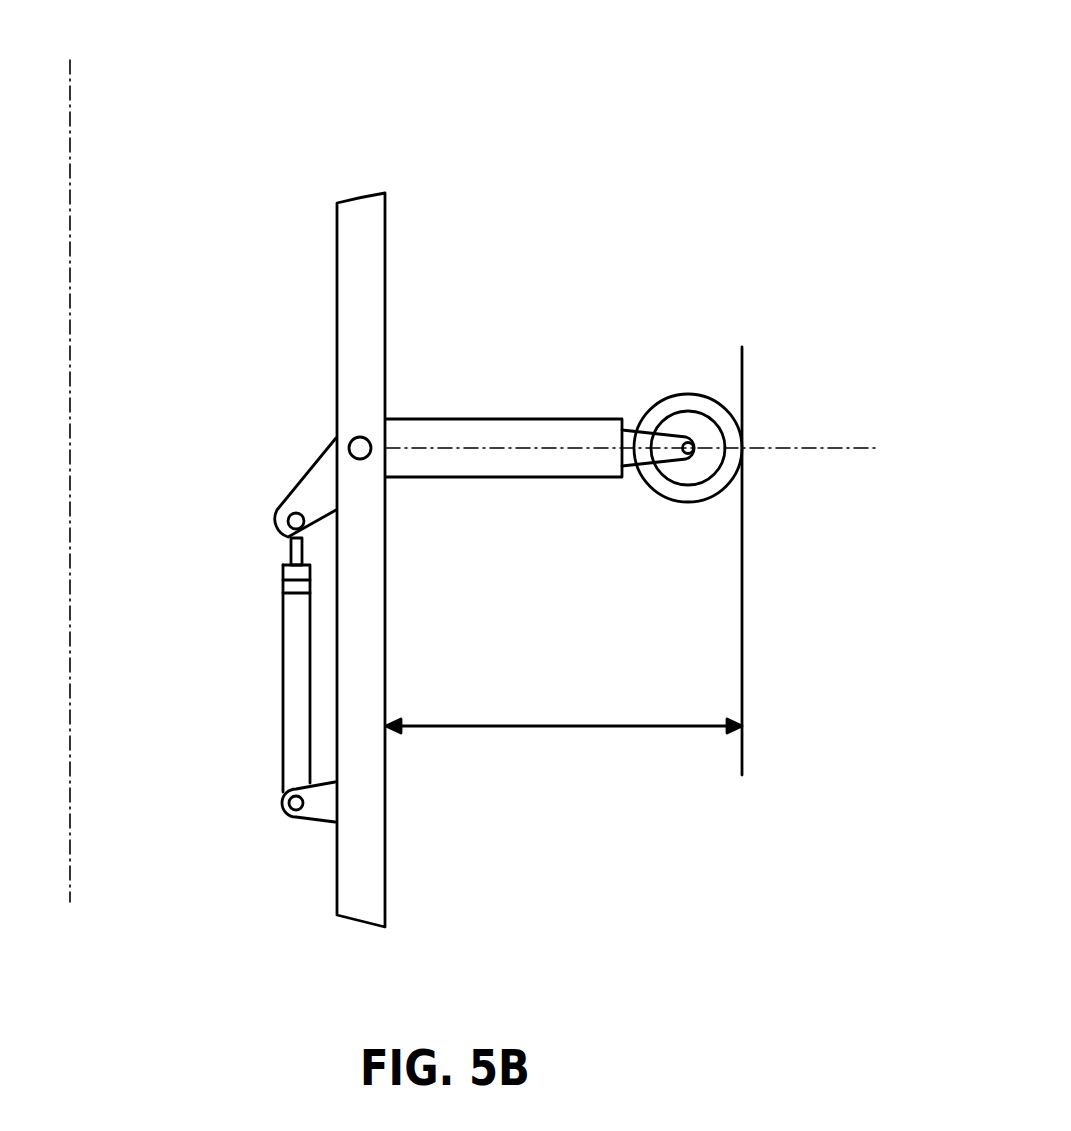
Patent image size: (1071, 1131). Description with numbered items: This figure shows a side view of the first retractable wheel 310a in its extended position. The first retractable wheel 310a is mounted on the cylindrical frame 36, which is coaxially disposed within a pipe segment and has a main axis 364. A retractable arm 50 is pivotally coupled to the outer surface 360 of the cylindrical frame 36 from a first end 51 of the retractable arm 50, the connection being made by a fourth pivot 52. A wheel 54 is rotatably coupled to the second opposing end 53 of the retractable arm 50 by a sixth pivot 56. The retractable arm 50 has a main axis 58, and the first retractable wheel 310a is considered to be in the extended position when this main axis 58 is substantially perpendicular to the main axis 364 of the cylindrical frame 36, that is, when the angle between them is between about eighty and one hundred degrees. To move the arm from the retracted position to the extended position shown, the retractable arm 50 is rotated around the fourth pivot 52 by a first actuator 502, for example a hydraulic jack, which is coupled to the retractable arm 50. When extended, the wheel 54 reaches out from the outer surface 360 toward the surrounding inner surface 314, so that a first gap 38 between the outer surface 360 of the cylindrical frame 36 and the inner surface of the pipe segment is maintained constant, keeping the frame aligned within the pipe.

The first retractable wheel 310a is at (777, 31).
The main axis of cylindrical frame 364 is at (72, 88).
The cylindrical frame 36 is at (348, 221).
The outer surface of cylindrical frame 360 is at (387, 237).
The fourth pivot 52 is at (363, 444).
The sixth pivot 56 is at (685, 443).
The main axis of retractable arm 58 is at (832, 447).
The retractable arm 50 is at (510, 477).
The first end of retractable arm 51 is at (407, 495).
The second opposing end of retractable arm 53 is at (636, 506).
The wheel 54 is at (677, 502).
The inner surface of conduit 314 is at (742, 681).
The first gap 38 is at (565, 727).
The first actuator 502 is at (280, 685).